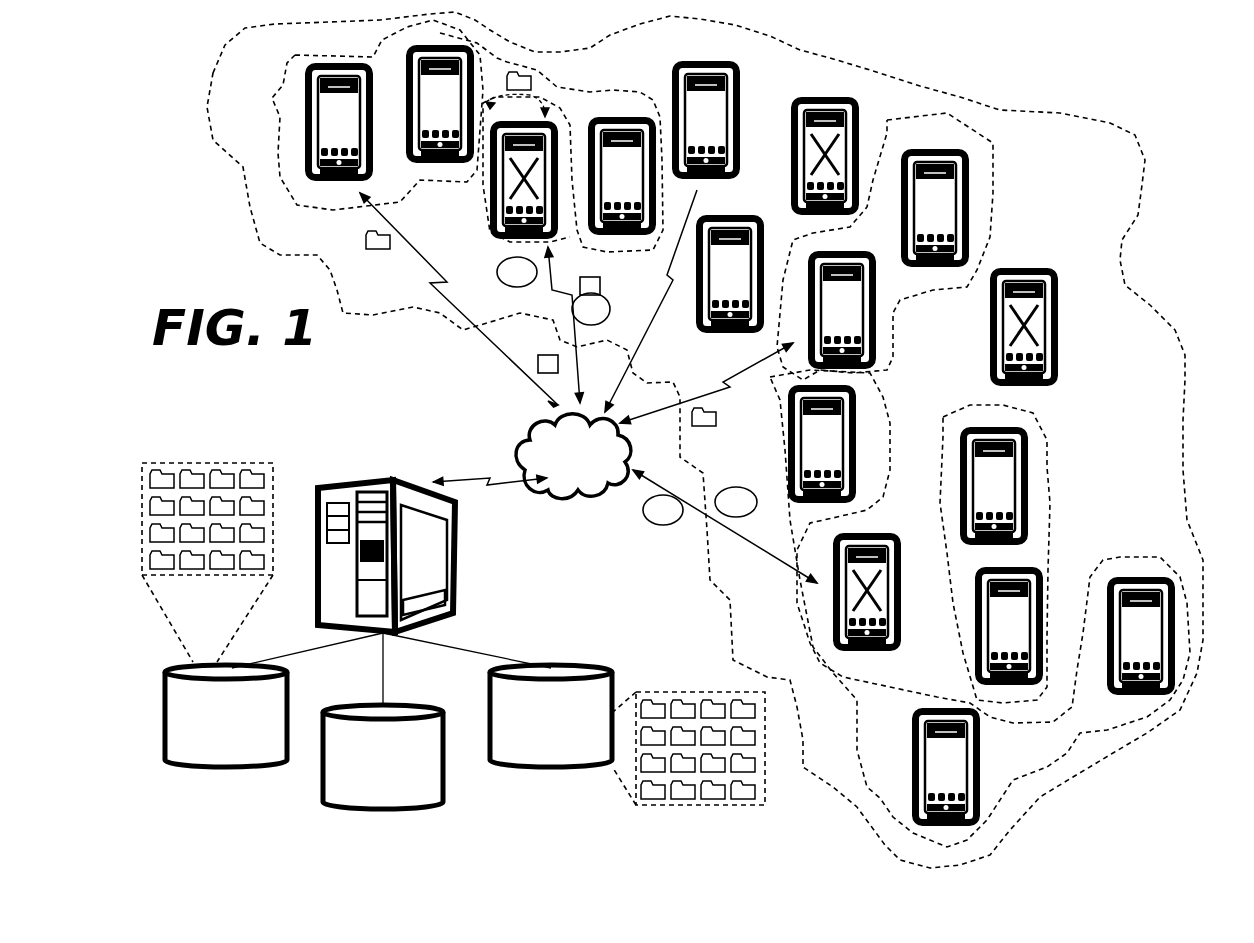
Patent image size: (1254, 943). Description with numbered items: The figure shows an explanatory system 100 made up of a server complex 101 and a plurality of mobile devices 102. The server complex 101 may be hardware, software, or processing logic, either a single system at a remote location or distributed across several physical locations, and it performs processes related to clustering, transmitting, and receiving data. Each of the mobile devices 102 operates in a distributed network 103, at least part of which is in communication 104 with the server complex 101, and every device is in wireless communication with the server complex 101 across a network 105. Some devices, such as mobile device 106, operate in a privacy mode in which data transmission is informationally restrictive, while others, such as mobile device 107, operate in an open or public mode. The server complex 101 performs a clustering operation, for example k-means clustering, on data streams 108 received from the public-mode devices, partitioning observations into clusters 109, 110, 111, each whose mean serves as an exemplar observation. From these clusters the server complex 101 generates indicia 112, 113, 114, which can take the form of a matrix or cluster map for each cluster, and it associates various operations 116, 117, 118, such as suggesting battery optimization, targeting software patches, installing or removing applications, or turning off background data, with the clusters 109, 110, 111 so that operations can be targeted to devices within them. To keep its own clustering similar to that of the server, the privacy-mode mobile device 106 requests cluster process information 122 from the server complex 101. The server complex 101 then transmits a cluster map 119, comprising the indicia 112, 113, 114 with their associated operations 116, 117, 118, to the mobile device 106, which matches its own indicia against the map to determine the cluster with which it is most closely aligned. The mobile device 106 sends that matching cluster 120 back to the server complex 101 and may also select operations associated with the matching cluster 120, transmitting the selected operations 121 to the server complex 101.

The system 100 is at (226, 282).
The server complex 101 is at (385, 478).
The plurality of mobile devices 102 is at (1162, 279).
The distributed network 103 is at (965, 90).
The communication 104 is at (470, 480).
The network 105 is at (518, 70).
The mobile device operating in privacy mode 106 is at (490, 185).
The mobile device operating in public mode 107 is at (305, 125).
The data streams 108 is at (374, 257).
The cluster 109 is at (604, 92).
The cluster 110 is at (993, 193).
The cluster 111 is at (1047, 462).
The indicia of cluster 112 is at (167, 472).
The indicia of cluster 113 is at (192, 472).
The indicia of cluster 114 is at (217, 472).
The operation 116 is at (653, 700).
The operation 117 is at (680, 698).
The operation 118 is at (717, 698).
The cluster map 119 is at (497, 273).
The matching cluster 120 is at (610, 310).
The selected operations 121 is at (592, 277).
The cluster process information 122 is at (548, 355).